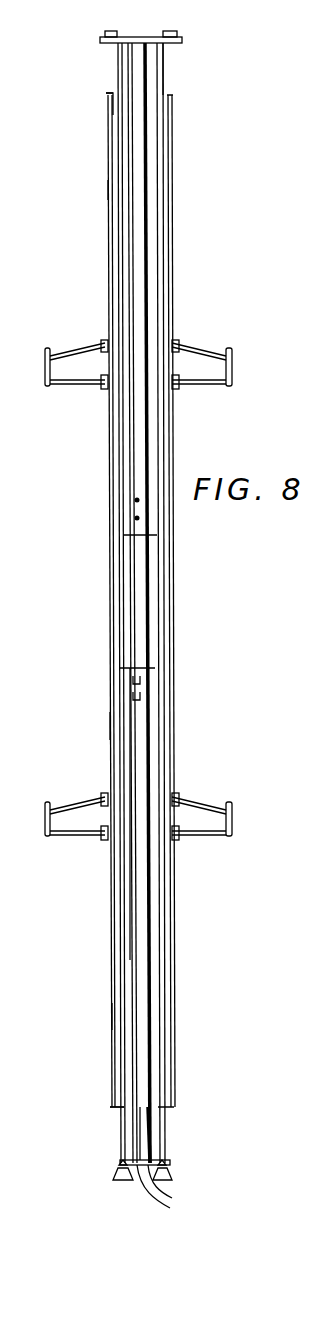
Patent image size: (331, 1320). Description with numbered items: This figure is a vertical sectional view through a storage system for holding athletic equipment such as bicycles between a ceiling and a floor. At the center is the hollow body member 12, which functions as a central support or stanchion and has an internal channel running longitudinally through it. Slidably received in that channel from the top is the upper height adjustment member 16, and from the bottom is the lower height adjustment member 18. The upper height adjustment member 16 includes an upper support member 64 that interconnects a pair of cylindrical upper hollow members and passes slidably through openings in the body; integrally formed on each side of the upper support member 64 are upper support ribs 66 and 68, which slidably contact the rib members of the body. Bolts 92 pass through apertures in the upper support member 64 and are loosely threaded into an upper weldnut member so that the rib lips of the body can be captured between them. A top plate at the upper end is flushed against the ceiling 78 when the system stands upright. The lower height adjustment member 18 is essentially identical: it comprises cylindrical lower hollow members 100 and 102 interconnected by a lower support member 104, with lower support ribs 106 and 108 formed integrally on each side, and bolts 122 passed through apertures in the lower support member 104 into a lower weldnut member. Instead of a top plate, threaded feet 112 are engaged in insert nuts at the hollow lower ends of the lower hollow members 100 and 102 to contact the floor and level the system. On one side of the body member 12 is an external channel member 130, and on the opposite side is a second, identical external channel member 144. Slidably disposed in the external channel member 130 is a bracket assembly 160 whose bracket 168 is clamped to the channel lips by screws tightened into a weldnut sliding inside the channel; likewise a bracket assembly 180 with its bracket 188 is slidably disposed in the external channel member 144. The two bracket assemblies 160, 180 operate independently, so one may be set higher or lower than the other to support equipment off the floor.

The hollow body member 12 is at (140, 600).
The upper height adjustment member 16 is at (170, 77).
The lower height adjustment member 18 is at (175, 1129).
The upper support member 64 is at (140, 284).
The upper support rib 66 is at (146, 240).
The upper support rib 68 is at (112, 96).
The ceiling 78 is at (146, 36).
The bolts 92 is at (137, 518).
The cylindrical lower hollow member 100 is at (175, 1144).
The cylindrical lower hollow member 102 is at (117, 1127).
The lower support member 104 is at (143, 1140).
The lower support rib 106 is at (176, 1188).
The lower support rib 108 is at (154, 1196).
The threaded feet 112 is at (160, 1166).
The bolts 122 is at (155, 698).
The external channel member 130 is at (172, 192).
The second external channel member 144 is at (108, 181).
The bracket assembly 160 is at (196, 339).
The bracket 168 is at (204, 388).
The bracket assembly 180 is at (75, 396).
The bracket 188 is at (80, 338).